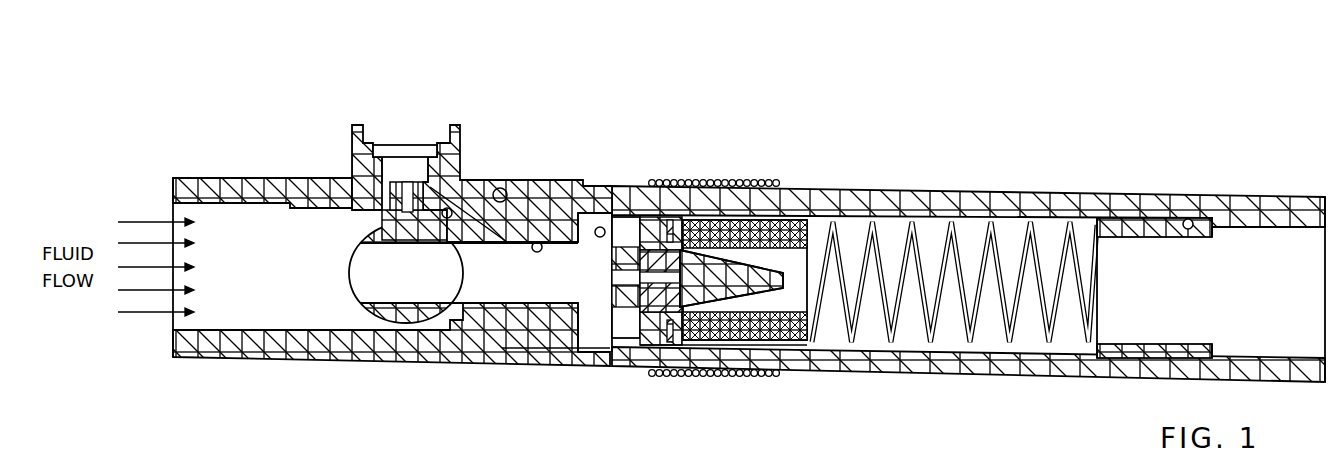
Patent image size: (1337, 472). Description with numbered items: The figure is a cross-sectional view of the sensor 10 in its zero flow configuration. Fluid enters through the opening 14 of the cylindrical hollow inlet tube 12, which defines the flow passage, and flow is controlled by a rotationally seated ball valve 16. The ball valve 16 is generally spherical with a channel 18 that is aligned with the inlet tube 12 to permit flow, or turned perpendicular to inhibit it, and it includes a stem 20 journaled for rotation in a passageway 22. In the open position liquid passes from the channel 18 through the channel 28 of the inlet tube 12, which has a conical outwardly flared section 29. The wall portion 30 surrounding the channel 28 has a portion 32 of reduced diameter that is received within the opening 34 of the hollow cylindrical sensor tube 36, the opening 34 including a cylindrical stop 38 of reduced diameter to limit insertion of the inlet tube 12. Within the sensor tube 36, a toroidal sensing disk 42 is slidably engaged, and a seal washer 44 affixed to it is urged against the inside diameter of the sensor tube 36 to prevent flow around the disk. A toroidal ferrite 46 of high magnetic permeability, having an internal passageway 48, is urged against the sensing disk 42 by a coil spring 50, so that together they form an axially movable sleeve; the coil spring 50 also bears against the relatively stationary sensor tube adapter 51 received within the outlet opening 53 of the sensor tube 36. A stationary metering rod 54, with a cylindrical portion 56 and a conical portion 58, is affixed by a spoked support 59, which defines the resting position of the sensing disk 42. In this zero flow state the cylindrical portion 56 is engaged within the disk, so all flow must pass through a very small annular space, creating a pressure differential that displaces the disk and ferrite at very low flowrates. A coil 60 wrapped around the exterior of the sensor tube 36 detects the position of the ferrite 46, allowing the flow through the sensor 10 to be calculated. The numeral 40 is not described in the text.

The sensor 10 is at (529, 62).
The inlet tube 12 is at (473, 180).
The opening 14 is at (187, 322).
The ball valve 16 is at (342, 320).
The channel 18 is at (347, 240).
The stem 20 is at (397, 193).
The passageway 22 is at (423, 153).
The channel 28 is at (583, 197).
The conical outwardly flared section 29 is at (602, 193).
The wall portion 30 is at (560, 193).
The portion of reduced diameter 32 is at (527, 193).
The opening 34 is at (497, 187).
The sensor tube 36 is at (625, 200).
The cylindrical stop 38 is at (630, 193).
The flow regulator 40 is at (752, 408).
The toroidal sensing disk 42 is at (645, 337).
The seal washer 44 is at (665, 340).
The toroidal ferrite 46 is at (787, 345).
The internal passageway 48 is at (793, 305).
The coil spring 50 is at (907, 343).
The sensor tube adapter 51 is at (1257, 212).
The outlet opening 53 is at (1193, 212).
The metering rod 54 is at (759, 252).
The cylindrical portion 56 is at (697, 345).
The conical portion 58 is at (772, 268).
The spoked support 59 is at (617, 340).
The coil 60 is at (747, 375).